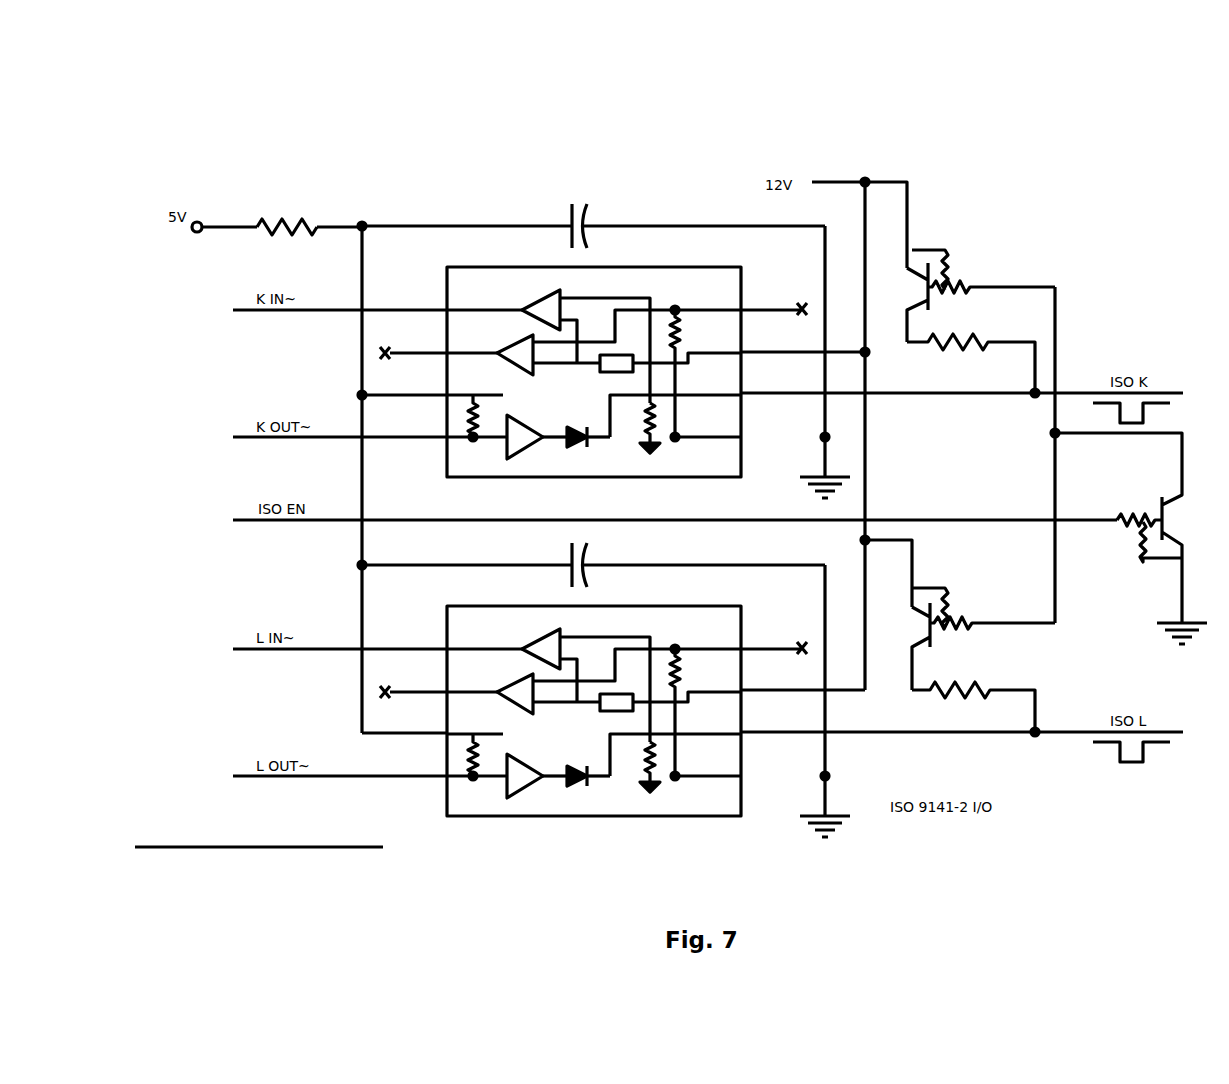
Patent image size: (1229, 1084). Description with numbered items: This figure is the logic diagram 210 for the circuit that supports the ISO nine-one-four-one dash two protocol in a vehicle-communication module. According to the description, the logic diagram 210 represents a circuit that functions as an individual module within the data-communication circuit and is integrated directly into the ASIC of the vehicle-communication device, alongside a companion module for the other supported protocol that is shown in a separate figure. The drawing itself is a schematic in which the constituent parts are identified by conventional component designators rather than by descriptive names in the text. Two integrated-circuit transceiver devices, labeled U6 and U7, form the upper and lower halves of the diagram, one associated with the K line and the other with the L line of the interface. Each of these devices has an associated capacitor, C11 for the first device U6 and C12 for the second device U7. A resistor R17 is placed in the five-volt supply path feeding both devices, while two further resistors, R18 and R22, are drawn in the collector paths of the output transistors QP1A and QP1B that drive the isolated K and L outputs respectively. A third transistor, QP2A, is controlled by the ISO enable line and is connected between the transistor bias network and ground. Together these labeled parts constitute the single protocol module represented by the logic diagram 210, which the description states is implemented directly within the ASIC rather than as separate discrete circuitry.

The logic diagram 210 is at (1130, 216).
The K-line transceiver IC (SI9243AEY or L9637D/L9513B) U6 is at (593, 372).
The L-line transceiver IC (SI9243AEY or L9637D/L9513B) U7 is at (593, 711).
The 0.1uF decoupling capacitor for U6 C11 is at (581, 224).
The 0.1uF decoupling capacitor for U7 C12 is at (581, 563).
The 51 ohm supply resistor R17 is at (287, 228).
The 510 ohm 1/4W resistor R18 is at (971, 357).
The 510 ohm 1/4W resistor R22 is at (973, 695).
The XN04112 digital transistor QP1A is at (976, 278).
The XN04112 digital transistor QP1B is at (976, 620).
The XN04212 digital transistor QP2A is at (1131, 538).